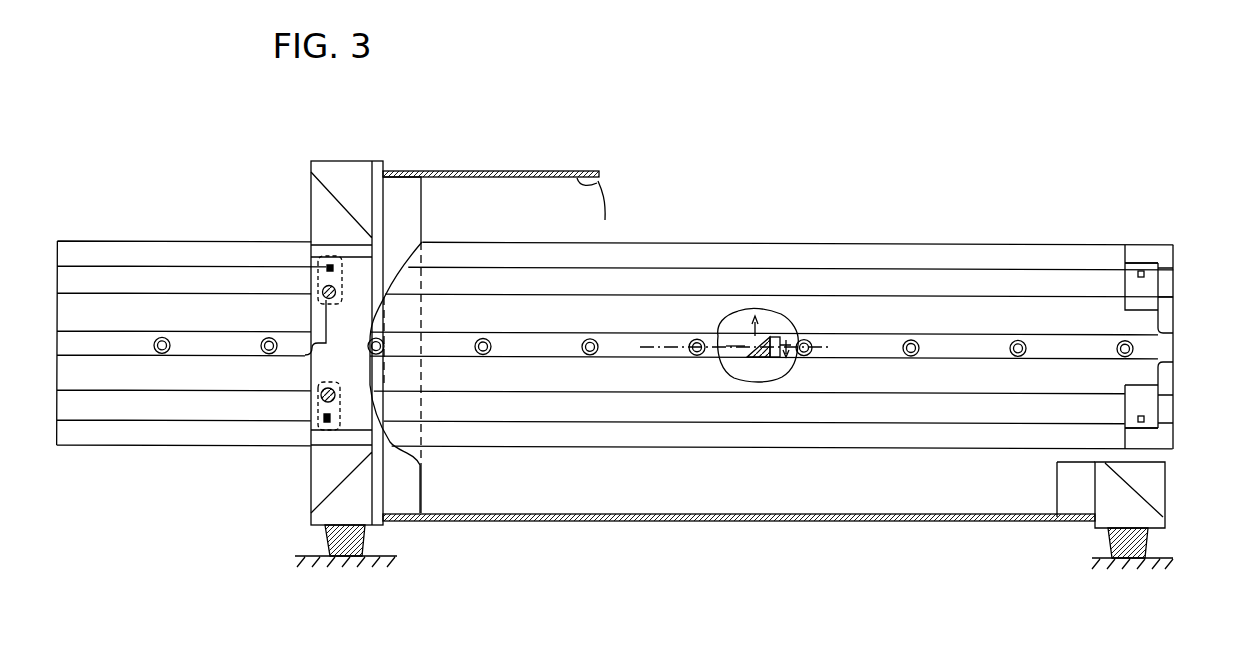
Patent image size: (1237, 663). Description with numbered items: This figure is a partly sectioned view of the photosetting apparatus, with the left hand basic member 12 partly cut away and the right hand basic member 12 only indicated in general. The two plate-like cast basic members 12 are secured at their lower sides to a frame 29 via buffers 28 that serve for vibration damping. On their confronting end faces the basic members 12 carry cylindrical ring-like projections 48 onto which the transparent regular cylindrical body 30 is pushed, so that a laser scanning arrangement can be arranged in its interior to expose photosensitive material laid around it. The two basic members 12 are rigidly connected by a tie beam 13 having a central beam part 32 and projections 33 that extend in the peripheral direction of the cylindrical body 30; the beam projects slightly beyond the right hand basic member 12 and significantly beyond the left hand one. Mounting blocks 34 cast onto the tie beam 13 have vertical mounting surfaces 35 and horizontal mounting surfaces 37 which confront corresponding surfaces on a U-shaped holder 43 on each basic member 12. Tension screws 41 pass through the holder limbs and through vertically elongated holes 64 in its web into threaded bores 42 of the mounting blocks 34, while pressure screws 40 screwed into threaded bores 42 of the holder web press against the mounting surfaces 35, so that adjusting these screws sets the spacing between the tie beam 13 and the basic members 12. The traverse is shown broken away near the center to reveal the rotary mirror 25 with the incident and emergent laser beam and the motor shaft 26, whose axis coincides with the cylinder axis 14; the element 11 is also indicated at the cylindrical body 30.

The tube end / cover plate connection 11 is at (606, 187).
The basic member 12 is at (330, 510).
The tie beam 13 is at (877, 450).
The cylinder axis 14 is at (722, 368).
The rotary mirror 25 is at (770, 336).
The motor shaft 26 is at (794, 330).
The buffer 28 is at (366, 540).
The frame 29 is at (322, 566).
The regular cylindrical body 30 is at (561, 170).
The central beam part 32 is at (949, 343).
The projection 33 is at (811, 242).
The mounting block 34 is at (1160, 288).
The vertical mounting surface 35 is at (1146, 298).
The horizontal mounting surface 37 is at (1150, 262).
The pressure screw 40 is at (333, 296).
The tension screw 41 is at (326, 264).
The threaded bore 42 is at (1136, 274).
The U-shaped holder 43 is at (310, 358).
The cylindrical ring-like projection 48 is at (416, 222).
The hole 64 is at (332, 262).